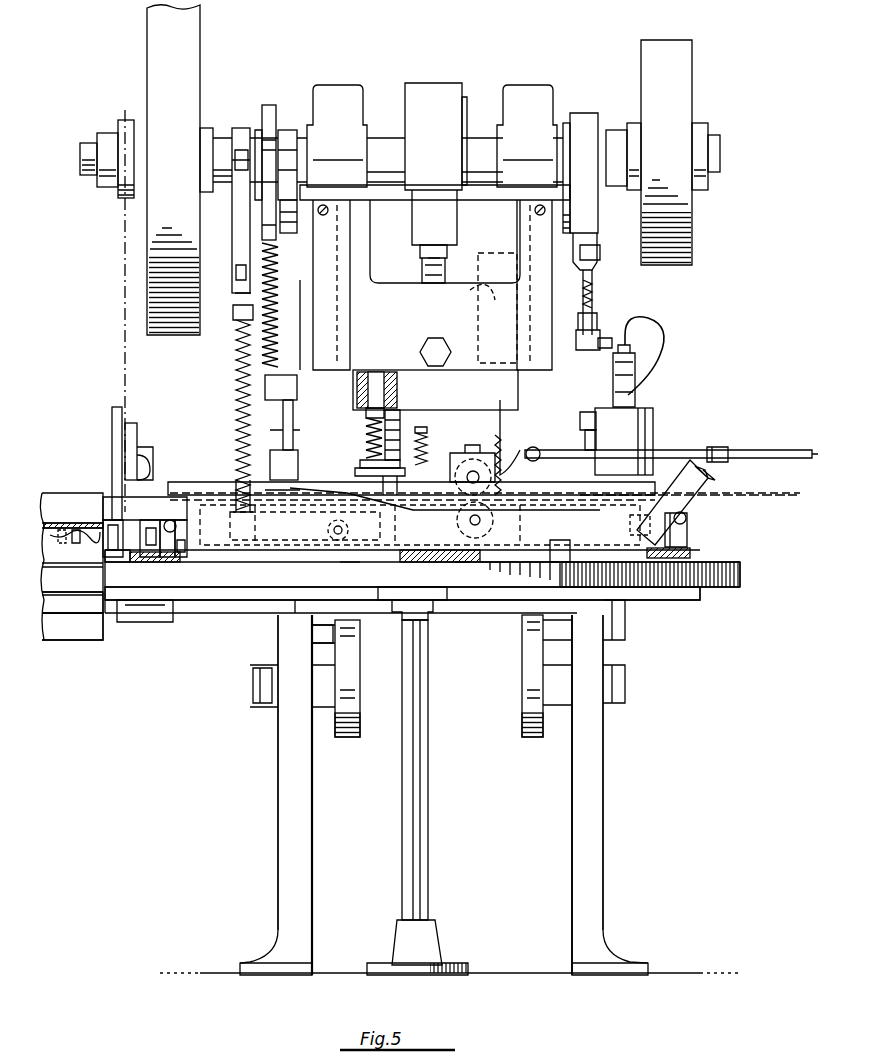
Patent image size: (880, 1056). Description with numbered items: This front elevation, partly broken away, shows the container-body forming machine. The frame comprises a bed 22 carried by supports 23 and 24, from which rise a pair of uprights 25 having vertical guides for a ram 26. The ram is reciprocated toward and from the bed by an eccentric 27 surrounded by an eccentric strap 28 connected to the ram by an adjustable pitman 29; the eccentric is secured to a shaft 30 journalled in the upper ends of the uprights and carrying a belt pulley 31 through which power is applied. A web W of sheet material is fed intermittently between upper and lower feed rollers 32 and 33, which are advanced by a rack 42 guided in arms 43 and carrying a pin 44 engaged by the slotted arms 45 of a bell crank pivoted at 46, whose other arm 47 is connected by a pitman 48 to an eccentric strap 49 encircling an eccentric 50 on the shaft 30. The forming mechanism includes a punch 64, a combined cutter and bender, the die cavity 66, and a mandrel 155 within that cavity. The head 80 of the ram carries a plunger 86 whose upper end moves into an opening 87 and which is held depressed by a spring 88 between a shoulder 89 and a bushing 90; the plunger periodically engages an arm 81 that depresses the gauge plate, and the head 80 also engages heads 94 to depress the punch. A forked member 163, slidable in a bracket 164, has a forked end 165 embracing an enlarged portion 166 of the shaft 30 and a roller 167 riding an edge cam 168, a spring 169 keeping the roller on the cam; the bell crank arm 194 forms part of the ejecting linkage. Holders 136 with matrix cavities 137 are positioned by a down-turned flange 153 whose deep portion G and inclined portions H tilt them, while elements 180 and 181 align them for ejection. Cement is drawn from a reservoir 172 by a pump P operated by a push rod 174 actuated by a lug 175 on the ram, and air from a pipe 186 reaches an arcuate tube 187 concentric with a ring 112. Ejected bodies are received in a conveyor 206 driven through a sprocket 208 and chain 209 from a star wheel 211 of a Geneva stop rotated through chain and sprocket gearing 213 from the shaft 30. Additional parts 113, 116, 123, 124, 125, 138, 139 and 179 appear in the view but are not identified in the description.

The bed 22 is at (742, 582).
The support 23 is at (428, 816).
The support 24 is at (300, 866).
The uprights 25 is at (338, 110).
The ram 26 is at (390, 282).
The eccentric 27 is at (467, 96).
The eccentric strap 28 is at (430, 90).
The adjustable pitman 29 is at (448, 265).
The shaft 30 is at (86, 145).
The belt pulley 31 is at (670, 222).
The upper feed roller 32 is at (470, 458).
The lower feed roller 33 is at (472, 545).
The rack 42 is at (495, 440).
The arms 43 is at (492, 330).
The pin 44 is at (500, 400).
The slotted arms 45 is at (540, 454).
The bell crank pivot 46 is at (597, 440).
The bell crank arm 47 is at (597, 418).
The pitman 48 is at (600, 305).
The eccentric strap 49 is at (582, 125).
The eccentric 50 is at (567, 127).
The punch 64 is at (450, 470).
The die cavity 66 is at (390, 476).
The ram head 80 is at (452, 372).
The arm 81 is at (385, 545).
The plunger 86 is at (389, 435).
The opening 87 is at (376, 372).
The spring 88 is at (366, 438).
The shoulder 89 is at (362, 462).
The bushing 90 is at (366, 412).
The heads 94 is at (421, 427).
The bell crank arm 194 is at (355, 472).
The ring 112 is at (150, 600).
The table end blocks 113 is at (110, 600).
The bracket 116 is at (238, 622).
The threaded rod 123 is at (236, 366).
The lever bar 124 is at (236, 126).
The nut 125 is at (231, 205).
The holder 136 is at (672, 470).
The matrix cavity 137 is at (715, 476).
The pivot bracket 138 is at (688, 540).
The pivot pin 139 is at (687, 518).
The down-turned flange 153 is at (560, 545).
The mandrel 155 is at (457, 520).
The forked member 163 is at (265, 418).
The bracket 164 is at (236, 395).
The forked end 165 is at (268, 104).
The enlarged portion 166 is at (259, 128).
The roller 167 is at (289, 234).
The edge cam 168 is at (288, 128).
The spring 169 is at (262, 292).
The reservoir 172 is at (653, 418).
The push rod 174 is at (593, 283).
The lug 175 is at (601, 250).
The hose 179 is at (668, 348).
The aligning element 180 is at (182, 540).
The stop element 181 is at (108, 540).
The pipe 186 is at (784, 450).
The arcuate tube 187 is at (725, 446).
The endless travelling conveyor 206 is at (78, 636).
The sprocket 208 is at (60, 530).
The chain 209 is at (76, 530).
The star wheel 211 is at (72, 602).
The chain and sprocket gearing 213 is at (120, 198).
The deep portion G is at (615, 588).
The inclined portions H is at (348, 562).
The pump P is at (606, 338).
The web W is at (790, 494).